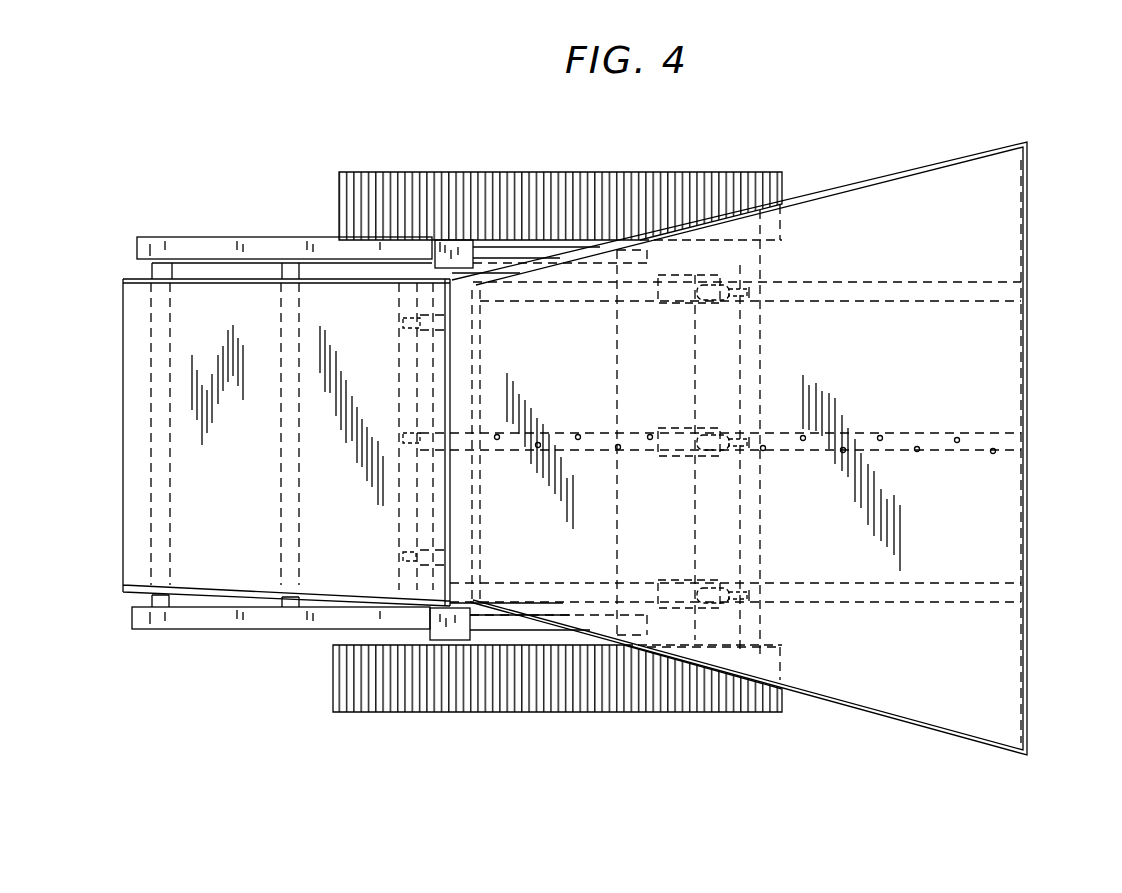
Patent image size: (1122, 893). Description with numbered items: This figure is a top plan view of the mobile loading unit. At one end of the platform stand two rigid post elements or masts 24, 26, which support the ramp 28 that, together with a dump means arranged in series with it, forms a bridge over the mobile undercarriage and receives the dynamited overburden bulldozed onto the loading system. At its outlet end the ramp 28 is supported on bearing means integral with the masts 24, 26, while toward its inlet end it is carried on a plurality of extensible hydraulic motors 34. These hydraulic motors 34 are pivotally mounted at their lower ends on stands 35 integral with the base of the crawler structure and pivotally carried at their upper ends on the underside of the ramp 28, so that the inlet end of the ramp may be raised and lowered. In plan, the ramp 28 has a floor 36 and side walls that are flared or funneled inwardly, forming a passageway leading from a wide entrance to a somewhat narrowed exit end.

The mast 24 is at (447, 642).
The mast 26 is at (450, 255).
The ramp means 28 is at (1030, 520).
The extensible hydraulic motors 34 is at (722, 302).
The stands 35 is at (677, 303).
The floor 36 is at (1005, 349).